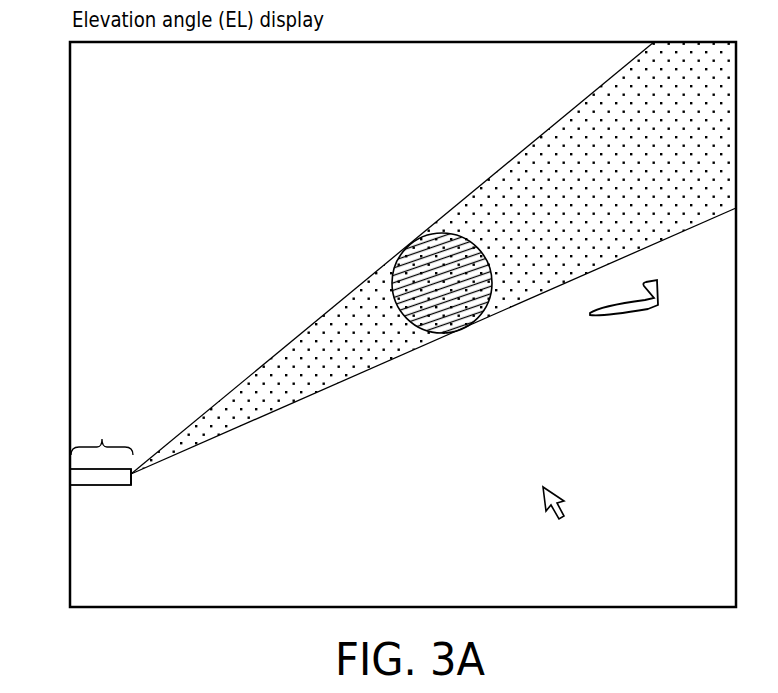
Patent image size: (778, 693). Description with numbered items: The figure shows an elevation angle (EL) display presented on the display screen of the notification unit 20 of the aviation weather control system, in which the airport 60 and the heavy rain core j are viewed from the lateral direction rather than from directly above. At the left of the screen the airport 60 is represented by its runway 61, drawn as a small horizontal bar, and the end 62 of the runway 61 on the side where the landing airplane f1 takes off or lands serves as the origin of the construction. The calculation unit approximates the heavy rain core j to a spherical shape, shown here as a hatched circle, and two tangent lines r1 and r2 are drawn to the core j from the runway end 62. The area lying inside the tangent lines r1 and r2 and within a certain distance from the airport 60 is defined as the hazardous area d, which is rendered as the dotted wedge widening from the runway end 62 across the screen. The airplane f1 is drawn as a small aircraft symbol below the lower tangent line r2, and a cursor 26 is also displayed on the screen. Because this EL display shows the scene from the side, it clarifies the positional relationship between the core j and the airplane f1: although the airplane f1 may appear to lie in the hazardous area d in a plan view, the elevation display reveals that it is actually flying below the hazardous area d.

The notification unit 20 is at (70, 135).
The hazardous area d is at (510, 190).
The tangent line r1 is at (290, 343).
The tangent line r2 is at (382, 365).
The heavy rain core j is at (413, 268).
The airplane f1 is at (625, 318).
The cursor 26 is at (555, 497).
The airport 60 is at (102, 433).
The runway 61 is at (100, 486).
The end of the runway 62 is at (133, 478).